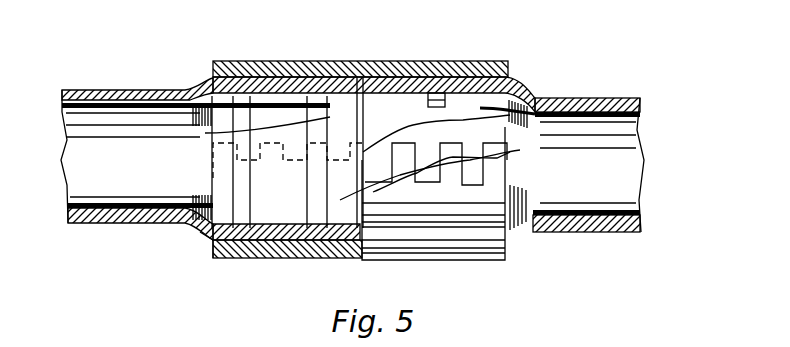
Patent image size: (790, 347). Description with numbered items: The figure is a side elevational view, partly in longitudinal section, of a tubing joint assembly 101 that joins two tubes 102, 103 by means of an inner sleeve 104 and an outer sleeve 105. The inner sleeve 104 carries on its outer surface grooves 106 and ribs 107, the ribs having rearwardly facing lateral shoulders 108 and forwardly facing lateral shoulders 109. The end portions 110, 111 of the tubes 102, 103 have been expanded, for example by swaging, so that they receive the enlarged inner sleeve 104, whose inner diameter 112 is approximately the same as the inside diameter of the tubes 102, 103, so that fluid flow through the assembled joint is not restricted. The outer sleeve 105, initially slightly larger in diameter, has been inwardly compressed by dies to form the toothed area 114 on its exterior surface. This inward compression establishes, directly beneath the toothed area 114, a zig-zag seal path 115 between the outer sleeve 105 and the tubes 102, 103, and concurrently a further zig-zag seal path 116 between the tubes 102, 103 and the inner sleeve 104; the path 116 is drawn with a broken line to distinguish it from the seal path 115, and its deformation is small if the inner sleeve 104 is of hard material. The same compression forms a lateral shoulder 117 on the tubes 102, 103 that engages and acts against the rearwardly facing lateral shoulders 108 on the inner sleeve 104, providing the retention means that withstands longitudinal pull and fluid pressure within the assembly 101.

The tubing joint assembly 101 is at (497, 59).
The tube 102 is at (133, 88).
The tube 103 is at (590, 98).
The inner sleeve 104 is at (210, 112).
The outer sleeve 105 is at (212, 243).
The grooves 106 is at (226, 190).
The ribs 107 is at (275, 232).
The rearwardly facing lateral shoulders 108 is at (466, 95).
The forwardly facing lateral shoulders 109 is at (432, 93).
The end portion 110 is at (276, 77).
The end portion 111 is at (375, 80).
The inner diameter 112 is at (216, 125).
The toothed area 114 is at (497, 173).
The zig-zag seal path 115 is at (490, 143).
The zig-zag seal path 116 is at (297, 180).
The compression formed lateral shoulder 117 is at (506, 93).